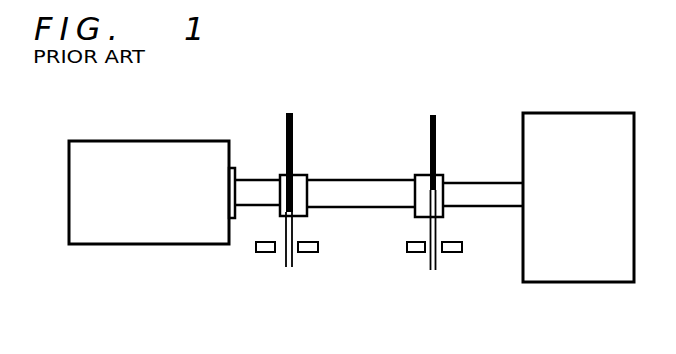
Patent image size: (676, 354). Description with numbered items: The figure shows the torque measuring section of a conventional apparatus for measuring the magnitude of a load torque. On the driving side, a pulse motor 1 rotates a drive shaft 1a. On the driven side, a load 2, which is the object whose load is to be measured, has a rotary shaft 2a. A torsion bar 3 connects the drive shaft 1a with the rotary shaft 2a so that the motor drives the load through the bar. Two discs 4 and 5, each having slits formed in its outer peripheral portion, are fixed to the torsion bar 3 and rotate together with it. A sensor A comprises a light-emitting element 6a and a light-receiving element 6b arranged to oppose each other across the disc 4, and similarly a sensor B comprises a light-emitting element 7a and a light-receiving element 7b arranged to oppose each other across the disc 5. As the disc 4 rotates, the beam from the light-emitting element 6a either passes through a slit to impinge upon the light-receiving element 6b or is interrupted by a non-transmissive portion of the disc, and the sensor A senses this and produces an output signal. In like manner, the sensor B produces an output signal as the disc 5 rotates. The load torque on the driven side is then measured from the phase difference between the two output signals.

The pulse motor 1 is at (173, 141).
The drive shaft 1a is at (265, 178).
The load 2 is at (610, 113).
The rotary shaft 2a is at (490, 182).
The torsion bar 3 is at (378, 178).
The disc 4 is at (294, 125).
The disc 5 is at (436, 127).
The light-emitting element 6a is at (267, 253).
The light-receiving element 6b is at (314, 280).
The light-emitting element 7a is at (422, 253).
The light-receiving element 7b is at (456, 282).
The sensor A is at (285, 298).
The sensor B is at (432, 298).